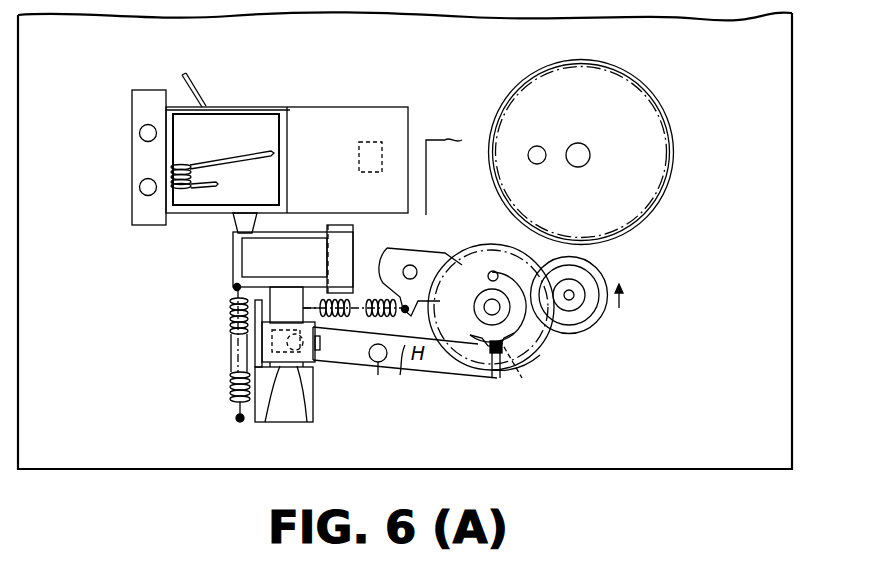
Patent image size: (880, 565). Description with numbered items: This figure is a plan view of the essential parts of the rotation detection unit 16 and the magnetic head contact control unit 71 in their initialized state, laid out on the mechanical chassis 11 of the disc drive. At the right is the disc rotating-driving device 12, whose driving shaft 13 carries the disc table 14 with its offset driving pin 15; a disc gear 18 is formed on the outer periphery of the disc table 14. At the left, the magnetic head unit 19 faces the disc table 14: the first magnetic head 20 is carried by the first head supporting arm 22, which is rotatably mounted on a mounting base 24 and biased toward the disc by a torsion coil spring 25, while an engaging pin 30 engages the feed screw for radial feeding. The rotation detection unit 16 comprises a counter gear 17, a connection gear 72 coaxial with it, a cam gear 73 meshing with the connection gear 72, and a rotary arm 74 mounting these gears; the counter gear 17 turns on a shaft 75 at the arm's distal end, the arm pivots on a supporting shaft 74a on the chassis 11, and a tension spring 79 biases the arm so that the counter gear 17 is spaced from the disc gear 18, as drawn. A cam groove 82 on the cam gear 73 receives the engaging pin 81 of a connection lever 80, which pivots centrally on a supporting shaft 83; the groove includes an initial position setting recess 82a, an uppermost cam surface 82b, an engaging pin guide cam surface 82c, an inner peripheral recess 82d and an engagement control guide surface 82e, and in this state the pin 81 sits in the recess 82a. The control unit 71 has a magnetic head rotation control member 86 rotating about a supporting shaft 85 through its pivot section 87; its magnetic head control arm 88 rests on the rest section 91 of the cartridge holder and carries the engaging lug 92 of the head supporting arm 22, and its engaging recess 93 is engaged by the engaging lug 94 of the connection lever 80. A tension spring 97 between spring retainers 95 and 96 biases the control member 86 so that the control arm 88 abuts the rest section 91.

The mechanical chassis 11 is at (780, 352).
The disc rotating-driving device 12 is at (675, 141).
The driving shaft 13 is at (583, 146).
The disc table 14 is at (645, 181).
The driving pin 15 is at (540, 147).
The rotation detection unit 16 is at (451, 386).
The counter gear 17 is at (610, 312).
The disc gear 18 is at (652, 213).
The magnetic head unit 19 is at (121, 133).
The first magnetic head 20 is at (366, 143).
The first head supporting arm 22 is at (328, 125).
The mounting base 24 is at (138, 162).
The torsion coil spring 25 is at (184, 190).
The engaging pin 30 is at (196, 90).
The control unit 71 is at (167, 265).
The connection gear 72 is at (576, 303).
The cam gear 73 is at (551, 346).
The rotary arm 74 is at (427, 263).
The supporting shaft 74a is at (407, 267).
The shaft 75 is at (572, 293).
The tension spring 79 is at (398, 303).
The connection lever 80 is at (417, 372).
The engaging pin 81 is at (506, 360).
The cam groove 82 is at (492, 271).
The initial position setting recess 82a is at (522, 380).
The uppermost cam surface 82b is at (505, 356).
The engaging pin guide cam surface 82c is at (507, 237).
The inner peripheral recess 82d is at (488, 273).
The engagement control guide surface 82e is at (490, 380).
The supporting shaft 83 is at (378, 377).
The supporting shaft 85 is at (320, 343).
The magnetic head rotation control member 86 is at (235, 289).
The pivot section 87 is at (236, 386).
The magnetic head control arm 88 is at (234, 263).
The rest section 91 is at (345, 230).
The engaging lug 92 is at (242, 221).
The engaging recess 93 is at (264, 424).
The engaging lug 94 is at (309, 424).
The spring retainer 95 is at (256, 318).
The spring retainer 96 is at (238, 421).
The tension spring 97 is at (232, 353).